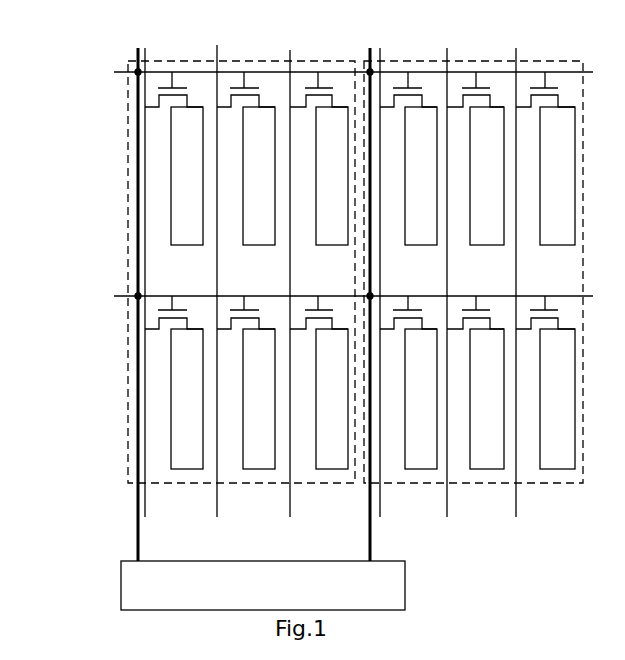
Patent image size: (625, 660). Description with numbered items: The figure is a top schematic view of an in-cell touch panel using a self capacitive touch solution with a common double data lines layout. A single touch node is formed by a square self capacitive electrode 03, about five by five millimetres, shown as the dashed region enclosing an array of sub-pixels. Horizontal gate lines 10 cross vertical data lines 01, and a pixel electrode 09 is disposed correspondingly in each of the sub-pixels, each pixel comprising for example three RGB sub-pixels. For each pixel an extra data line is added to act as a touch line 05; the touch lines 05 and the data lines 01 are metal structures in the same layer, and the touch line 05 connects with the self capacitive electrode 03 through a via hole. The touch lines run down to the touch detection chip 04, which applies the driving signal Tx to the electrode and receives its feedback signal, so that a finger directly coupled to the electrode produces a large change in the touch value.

The data line 01 is at (216, 53).
The gate line 10 is at (273, 71).
The pixel electrode 09 is at (178, 157).
The self capacitive electrode 03 is at (127, 192).
The touch line 05 is at (138, 543).
The touch detection chip 04 is at (120, 598).